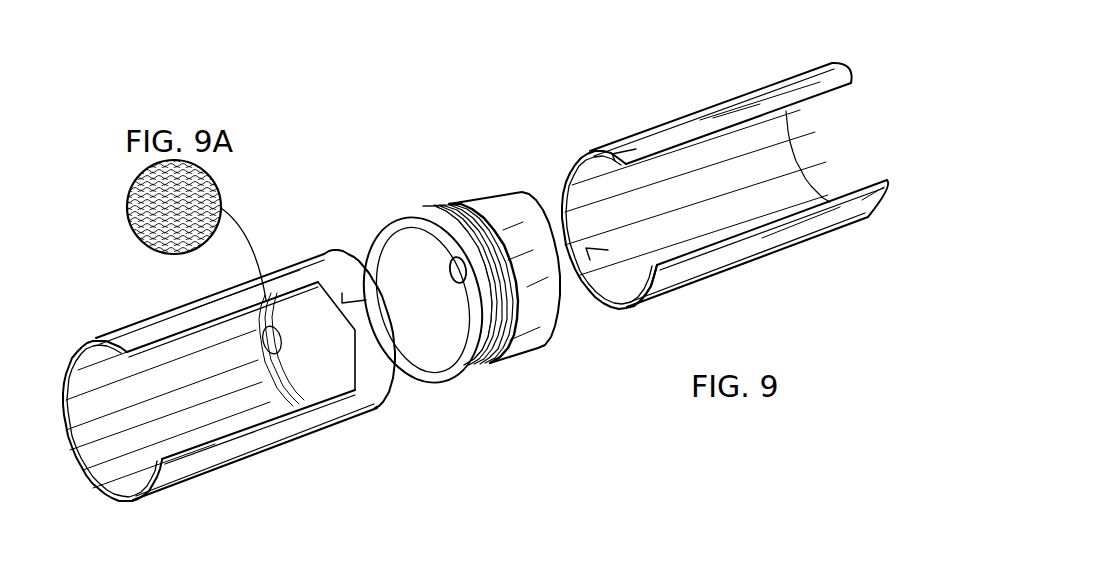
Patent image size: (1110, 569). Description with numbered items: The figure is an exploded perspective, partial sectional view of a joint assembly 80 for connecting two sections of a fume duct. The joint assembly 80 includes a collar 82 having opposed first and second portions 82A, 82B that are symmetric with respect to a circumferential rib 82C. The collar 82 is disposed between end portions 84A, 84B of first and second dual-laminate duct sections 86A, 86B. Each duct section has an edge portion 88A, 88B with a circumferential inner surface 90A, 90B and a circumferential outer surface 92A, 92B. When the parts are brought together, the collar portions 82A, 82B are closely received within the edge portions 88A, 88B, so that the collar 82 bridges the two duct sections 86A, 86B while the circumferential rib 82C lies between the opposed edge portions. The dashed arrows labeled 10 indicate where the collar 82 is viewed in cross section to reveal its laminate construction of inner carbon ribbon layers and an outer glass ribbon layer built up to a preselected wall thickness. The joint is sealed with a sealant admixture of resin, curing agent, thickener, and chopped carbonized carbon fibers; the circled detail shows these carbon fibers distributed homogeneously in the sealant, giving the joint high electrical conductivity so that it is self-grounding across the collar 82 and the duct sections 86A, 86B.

The pole assembly 10 is at (428, 207).
The joint assembly 80 is at (487, 130).
The collar 82 is at (469, 192).
The first portion of collar 82A is at (420, 228).
The second portion of collar 82B is at (523, 235).
The circumferential rib 82C is at (442, 206).
The end portion of first duct section 84A is at (323, 440).
The end portion of second duct section 84B is at (702, 288).
The first dual-laminate duct section 86A is at (140, 305).
The second dual-laminate duct section 86B is at (712, 62).
The edge portion of first duct section 88A is at (378, 410).
The edge portion of second duct section 88B is at (622, 310).
The circumferential inner surface 90A is at (288, 384).
The circumferential inner surface 90B is at (600, 265).
The circumferential outer surface 92A is at (342, 296).
The circumferential outer surface 92B is at (622, 150).